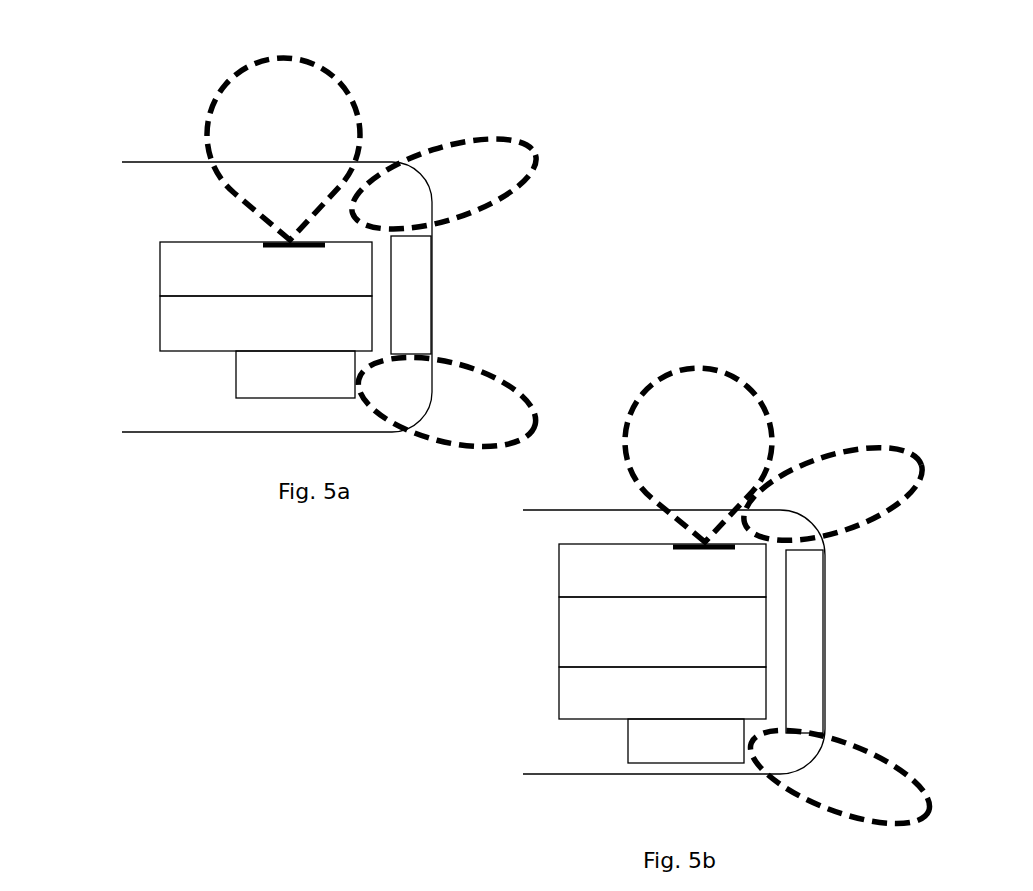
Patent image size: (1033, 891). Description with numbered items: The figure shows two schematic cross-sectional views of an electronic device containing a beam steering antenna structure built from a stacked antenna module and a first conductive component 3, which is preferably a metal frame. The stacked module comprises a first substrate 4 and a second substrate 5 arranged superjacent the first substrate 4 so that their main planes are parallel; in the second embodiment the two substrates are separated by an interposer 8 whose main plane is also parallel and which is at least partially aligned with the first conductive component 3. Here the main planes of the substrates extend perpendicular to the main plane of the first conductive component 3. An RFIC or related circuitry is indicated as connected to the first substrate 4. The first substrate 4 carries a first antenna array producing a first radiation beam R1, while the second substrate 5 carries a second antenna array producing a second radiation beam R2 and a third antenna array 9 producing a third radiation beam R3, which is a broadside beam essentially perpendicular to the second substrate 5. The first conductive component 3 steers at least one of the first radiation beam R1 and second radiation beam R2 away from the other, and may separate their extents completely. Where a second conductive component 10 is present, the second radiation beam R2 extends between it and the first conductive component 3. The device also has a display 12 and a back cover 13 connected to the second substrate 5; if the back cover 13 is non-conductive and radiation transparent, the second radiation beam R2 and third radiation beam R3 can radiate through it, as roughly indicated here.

In FIG. 5A, the first conductive component 3 is at (412, 287).
In FIG. 5B, the first conductive component 3 is at (807, 643).
In FIG. 5A, the first substrate 4 is at (190, 320).
In FIG. 5B, the first substrate 4 is at (585, 697).
In FIG. 5A, the second substrate 5 is at (202, 262).
In FIG. 5B, the second substrate 5 is at (585, 573).
In FIG. 5B, the interposer 8 is at (585, 633).
In FIG. 5A, the third antenna array 9 is at (265, 243).
In FIG. 5B, the third antenna array 9 is at (680, 538).
In FIG. 5A, the second conductive component 10 is at (231, 297).
In FIG. 5B, the second conductive component 10 is at (620, 631).
In FIG. 5A, the display 12 is at (202, 373).
In FIG. 5B, the display 12 is at (573, 743).
In FIG. 5A, the back cover 13 is at (160, 205).
In FIG. 5B, the back cover 13 is at (613, 523).
In FIG. 5A, the first radiation beam R1 is at (453, 397).
In FIG. 5B, the first radiation beam R1 is at (847, 772).
In FIG. 5A, the second radiation beam R2 is at (463, 180).
In FIG. 5B, the second radiation beam R2 is at (848, 482).
In FIG. 5A, the third radiation beam R3 is at (290, 128).
In FIG. 5B, the third radiation beam R3 is at (700, 425).